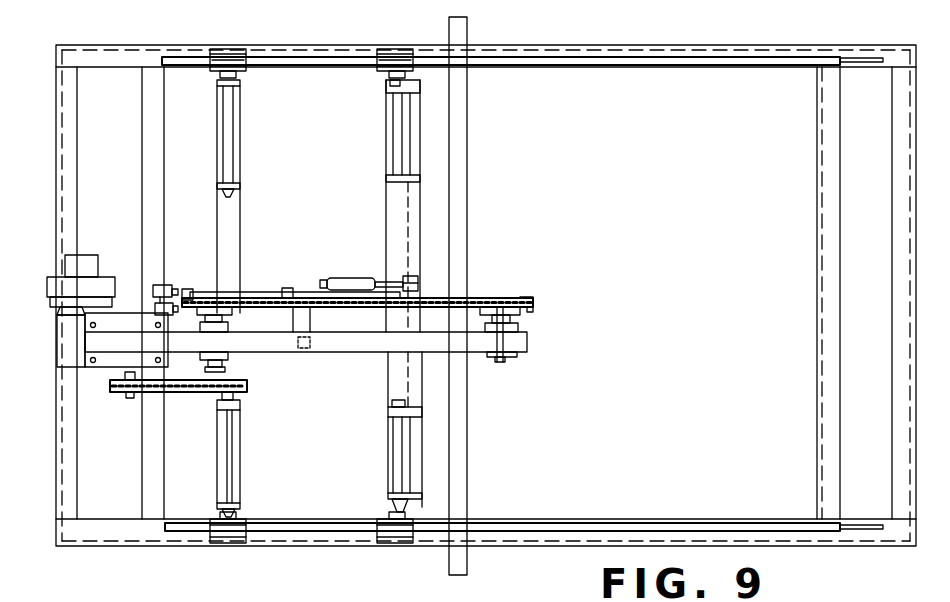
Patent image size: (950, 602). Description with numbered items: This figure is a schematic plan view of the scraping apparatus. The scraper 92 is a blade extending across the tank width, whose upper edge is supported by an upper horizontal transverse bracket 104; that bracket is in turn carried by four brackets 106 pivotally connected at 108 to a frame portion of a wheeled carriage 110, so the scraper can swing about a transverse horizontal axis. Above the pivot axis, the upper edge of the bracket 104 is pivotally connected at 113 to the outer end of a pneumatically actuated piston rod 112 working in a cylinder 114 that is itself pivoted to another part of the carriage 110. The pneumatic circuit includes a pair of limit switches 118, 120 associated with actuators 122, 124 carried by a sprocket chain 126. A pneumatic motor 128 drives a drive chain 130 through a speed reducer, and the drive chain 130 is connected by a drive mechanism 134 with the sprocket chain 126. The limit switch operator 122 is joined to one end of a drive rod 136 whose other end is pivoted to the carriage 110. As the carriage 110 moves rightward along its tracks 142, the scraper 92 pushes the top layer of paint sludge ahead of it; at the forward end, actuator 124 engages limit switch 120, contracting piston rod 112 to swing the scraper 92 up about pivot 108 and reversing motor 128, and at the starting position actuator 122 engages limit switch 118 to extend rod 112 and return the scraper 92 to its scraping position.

The scraper 92 is at (410, 390).
The upper horizontal transverse bracket 104 is at (413, 447).
The brackets 106 is at (413, 418).
The pivot 108 is at (400, 467).
The wheeled carriage 110 is at (385, 372).
The piston rod 112 is at (395, 272).
The pivotal connection 113 is at (418, 272).
The cylinder 114 is at (348, 273).
The limit switch 118 is at (175, 285).
The limit switch 120 is at (150, 300).
The actuator 122 is at (188, 290).
The actuator 124 is at (527, 312).
The sprocket chain 126 is at (280, 313).
The pneumatic motor 128 is at (88, 262).
The drive chain 130 is at (193, 392).
The drive mechanism 134 is at (222, 368).
The drive rod 136 is at (257, 291).
The tracks 142 is at (557, 527).